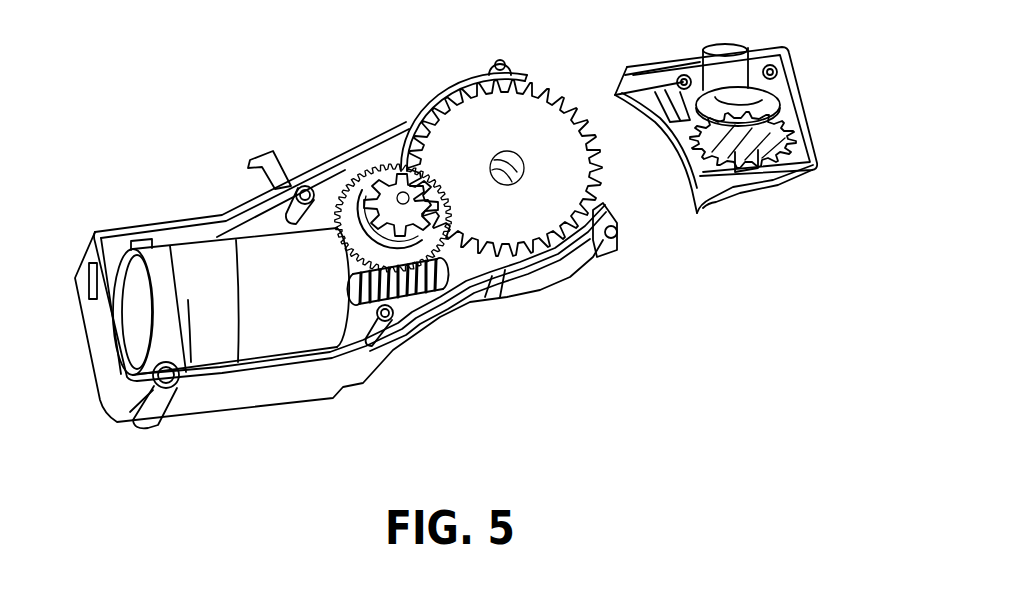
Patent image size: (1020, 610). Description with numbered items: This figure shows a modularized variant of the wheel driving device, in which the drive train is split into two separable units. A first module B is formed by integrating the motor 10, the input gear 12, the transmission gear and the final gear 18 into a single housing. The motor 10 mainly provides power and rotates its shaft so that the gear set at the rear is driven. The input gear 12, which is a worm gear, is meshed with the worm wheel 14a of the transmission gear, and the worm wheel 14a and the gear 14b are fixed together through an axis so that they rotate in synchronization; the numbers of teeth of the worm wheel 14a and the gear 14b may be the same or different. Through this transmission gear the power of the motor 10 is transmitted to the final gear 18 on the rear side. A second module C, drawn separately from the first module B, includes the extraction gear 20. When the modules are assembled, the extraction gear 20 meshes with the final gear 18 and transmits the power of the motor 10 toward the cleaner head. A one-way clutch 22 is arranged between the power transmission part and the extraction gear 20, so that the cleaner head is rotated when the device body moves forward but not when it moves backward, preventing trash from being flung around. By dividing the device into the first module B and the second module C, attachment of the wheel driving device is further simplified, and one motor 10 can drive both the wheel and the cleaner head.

The motor 10 is at (288, 335).
The input gear 12 is at (423, 297).
The worm wheel 14a is at (352, 200).
The gear 14b is at (385, 197).
The final gear 18 is at (515, 265).
The extraction gear 20 is at (807, 133).
The one-way clutch 22 is at (782, 103).
The first module B is at (320, 162).
The second module C is at (660, 63).